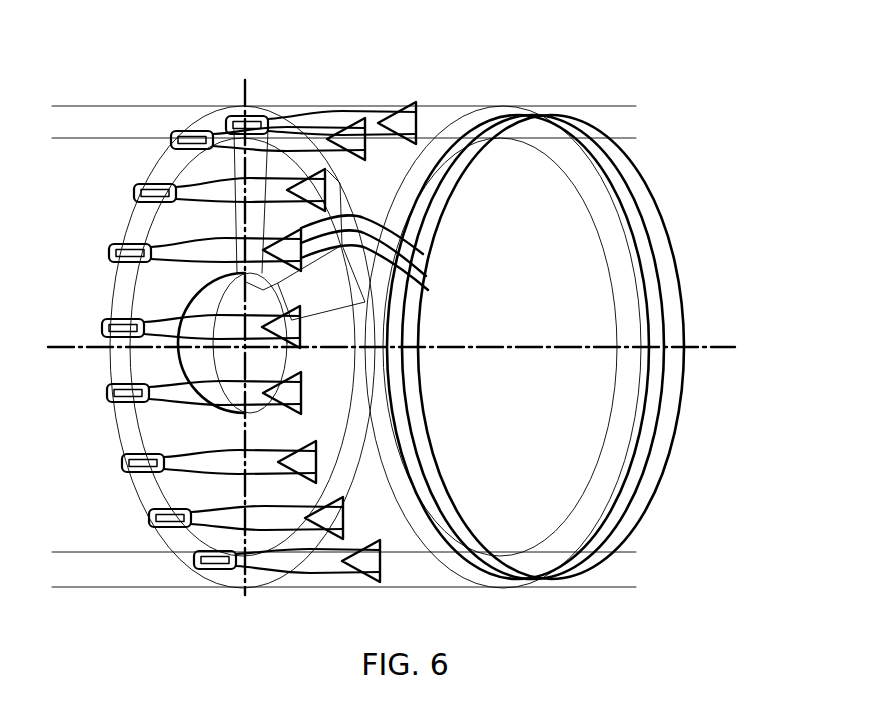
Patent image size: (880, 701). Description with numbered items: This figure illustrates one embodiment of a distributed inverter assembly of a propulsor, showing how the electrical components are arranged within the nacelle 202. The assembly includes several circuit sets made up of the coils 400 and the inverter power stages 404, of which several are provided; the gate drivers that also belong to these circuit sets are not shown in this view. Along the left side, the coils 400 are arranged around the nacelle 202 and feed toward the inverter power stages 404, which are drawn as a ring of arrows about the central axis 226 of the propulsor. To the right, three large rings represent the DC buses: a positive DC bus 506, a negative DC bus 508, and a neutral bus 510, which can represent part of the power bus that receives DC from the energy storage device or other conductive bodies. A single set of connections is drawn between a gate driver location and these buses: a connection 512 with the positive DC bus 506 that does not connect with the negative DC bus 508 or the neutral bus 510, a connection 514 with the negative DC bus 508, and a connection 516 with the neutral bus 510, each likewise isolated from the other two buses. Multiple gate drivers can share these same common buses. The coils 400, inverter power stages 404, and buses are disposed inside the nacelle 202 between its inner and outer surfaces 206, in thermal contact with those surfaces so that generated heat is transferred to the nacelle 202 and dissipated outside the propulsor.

The nacelle 202 is at (602, 105).
The air ducts 206 is at (274, 229).
The central axis 226 is at (724, 350).
The coils 400 is at (160, 182).
The inverter power stages 404 is at (418, 98).
The positive DC bus 506 is at (636, 234).
The negative DC bus 508 is at (685, 308).
The neutral bus 510 is at (658, 277).
The connection with the positive DC bus 512 is at (383, 230).
The connection with the negative DC bus 514 is at (428, 281).
The connection with the neutral bus 516 is at (424, 252).